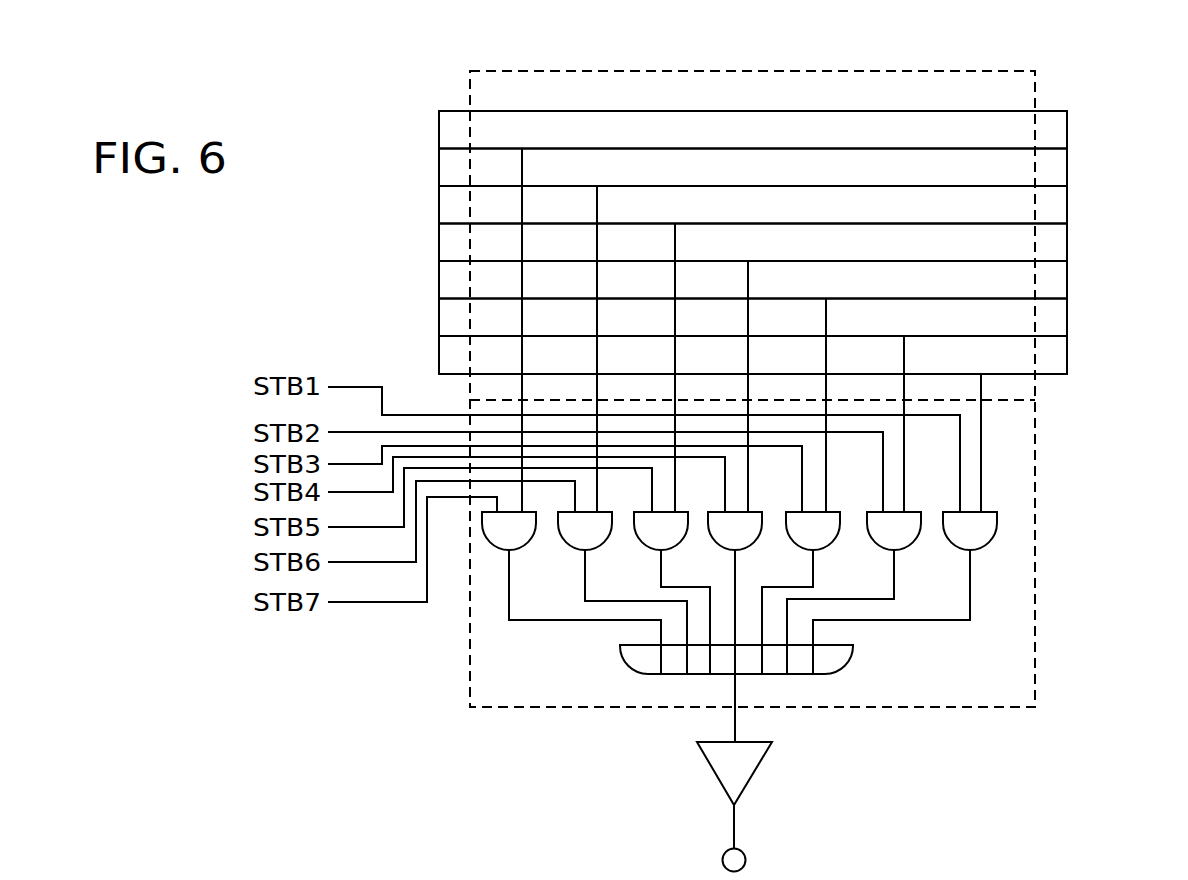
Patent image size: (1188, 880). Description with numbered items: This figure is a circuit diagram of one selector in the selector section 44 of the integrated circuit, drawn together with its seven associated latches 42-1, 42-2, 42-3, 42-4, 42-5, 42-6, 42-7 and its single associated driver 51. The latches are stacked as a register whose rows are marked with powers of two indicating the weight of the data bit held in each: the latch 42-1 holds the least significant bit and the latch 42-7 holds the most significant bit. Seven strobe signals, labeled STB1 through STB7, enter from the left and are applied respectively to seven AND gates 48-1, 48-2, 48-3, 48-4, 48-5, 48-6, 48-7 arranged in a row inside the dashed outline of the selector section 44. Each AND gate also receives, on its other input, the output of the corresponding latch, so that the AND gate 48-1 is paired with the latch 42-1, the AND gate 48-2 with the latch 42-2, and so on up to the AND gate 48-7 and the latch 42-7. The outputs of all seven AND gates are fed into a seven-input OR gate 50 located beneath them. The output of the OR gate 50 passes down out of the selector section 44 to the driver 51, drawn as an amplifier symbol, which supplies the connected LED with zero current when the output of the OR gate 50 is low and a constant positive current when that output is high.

The latch 42-1 is at (1052, 360).
The latch 42-2 is at (1066, 317).
The latch 42-3 is at (1066, 279).
The latch 42-4 is at (1066, 242).
The latch 42-5 is at (1066, 204).
The latch 42-6 is at (1066, 166).
The latch 42-7 is at (1058, 122).
The selector section 44 is at (1034, 528).
The AND gate 48-1 is at (987, 547).
The AND gate 48-2 is at (905, 542).
The AND gate 48-3 is at (828, 542).
The AND gate 48-4 is at (752, 539).
The AND gate 48-5 is at (678, 539).
The AND gate 48-6 is at (597, 542).
The AND gate 48-7 is at (526, 550).
The OR gate 50 is at (853, 662).
The driver 51 is at (765, 757).